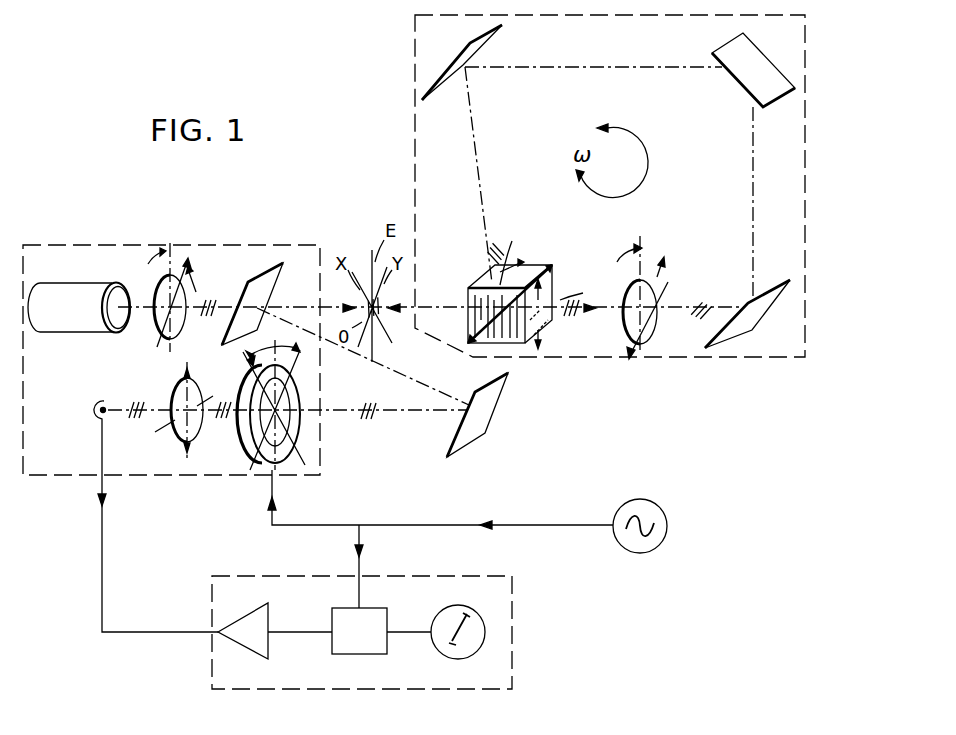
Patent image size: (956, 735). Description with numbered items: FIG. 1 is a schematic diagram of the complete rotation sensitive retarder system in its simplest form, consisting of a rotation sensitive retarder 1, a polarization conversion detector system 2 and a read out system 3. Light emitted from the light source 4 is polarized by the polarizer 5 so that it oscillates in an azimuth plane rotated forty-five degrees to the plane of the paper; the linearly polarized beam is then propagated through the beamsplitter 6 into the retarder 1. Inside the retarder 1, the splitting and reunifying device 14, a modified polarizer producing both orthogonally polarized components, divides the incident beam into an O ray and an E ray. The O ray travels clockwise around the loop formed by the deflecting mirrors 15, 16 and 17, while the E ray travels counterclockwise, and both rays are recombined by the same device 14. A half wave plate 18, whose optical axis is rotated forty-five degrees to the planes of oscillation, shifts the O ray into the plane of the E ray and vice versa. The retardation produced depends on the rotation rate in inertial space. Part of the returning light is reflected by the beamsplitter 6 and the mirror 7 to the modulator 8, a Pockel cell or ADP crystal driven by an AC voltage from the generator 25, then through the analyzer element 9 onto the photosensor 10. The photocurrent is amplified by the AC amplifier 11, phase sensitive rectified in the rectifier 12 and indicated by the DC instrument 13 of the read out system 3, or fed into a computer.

The rotation sensitive retarder 1 is at (414, 170).
The polarization conversion detector system 2 is at (208, 245).
The read out system 3 is at (512, 625).
The light source 4 is at (64, 283).
The polarizer 5 is at (153, 290).
The beamsplitter 6 is at (263, 279).
The mirror 7 is at (491, 425).
The modulator 8 is at (238, 437).
The analyzer element 9 is at (176, 436).
The photosensor 10 is at (93, 418).
The AC amplifier 11 is at (268, 604).
The rectifier 12 is at (383, 655).
The DC instrument 13 is at (463, 606).
The splitting and reunifying device 14 is at (540, 270).
The deflecting mirror 15 is at (455, 66).
The deflecting mirror 16 is at (770, 66).
The deflecting mirror 17 is at (735, 333).
The half wave plate 18 is at (654, 328).
The generator 25 is at (664, 543).